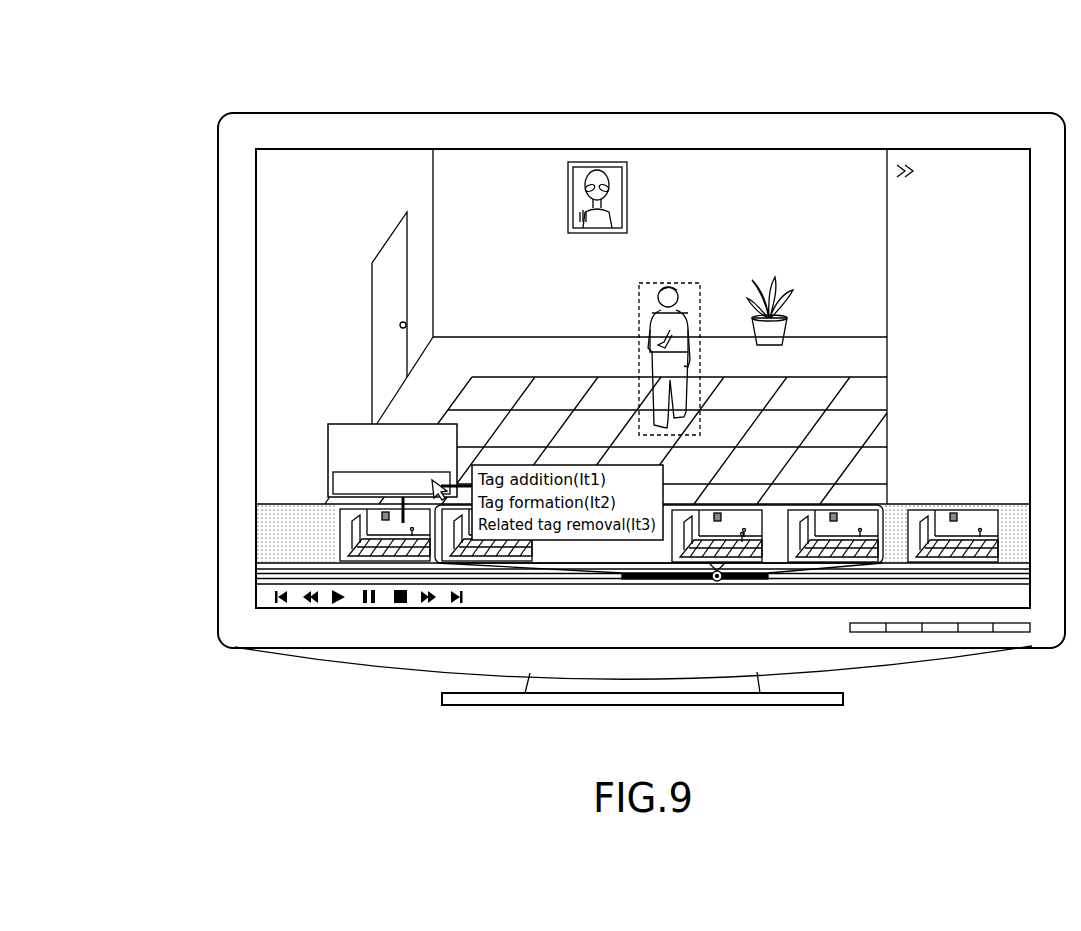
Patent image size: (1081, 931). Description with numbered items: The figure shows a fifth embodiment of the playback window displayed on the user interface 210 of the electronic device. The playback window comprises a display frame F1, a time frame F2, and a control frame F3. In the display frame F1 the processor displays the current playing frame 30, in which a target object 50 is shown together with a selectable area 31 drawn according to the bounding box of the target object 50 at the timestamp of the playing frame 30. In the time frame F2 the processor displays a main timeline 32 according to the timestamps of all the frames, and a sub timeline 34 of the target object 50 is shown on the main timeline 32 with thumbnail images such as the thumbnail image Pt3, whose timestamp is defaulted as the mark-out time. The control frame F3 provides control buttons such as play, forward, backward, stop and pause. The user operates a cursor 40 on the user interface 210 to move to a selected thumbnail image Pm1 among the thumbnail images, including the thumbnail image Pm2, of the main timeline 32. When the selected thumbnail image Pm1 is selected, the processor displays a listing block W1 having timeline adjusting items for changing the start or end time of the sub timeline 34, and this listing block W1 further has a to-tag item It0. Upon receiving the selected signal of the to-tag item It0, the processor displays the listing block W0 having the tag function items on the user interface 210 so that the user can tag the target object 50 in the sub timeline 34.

The user interface 210 is at (895, 113).
The playing frame 30 is at (779, 181).
The display frame F1 is at (483, 150).
The target object 50 is at (668, 286).
The selectable area 31 is at (652, 283).
The time frame F2 is at (257, 540).
The listing block W1 is at (356, 512).
The cursor 40 is at (437, 508).
The listing block W0 is at (553, 563).
The thumbnail image Pt3 is at (800, 561).
The thumbnail image Pm2 is at (917, 547).
The main timeline 32 is at (588, 584).
The sub timeline 34 is at (650, 580).
The control frame F3 is at (293, 608).
The selected thumbnail image Pm1 is at (385, 528).
The to-tag item It0 is at (328, 479).